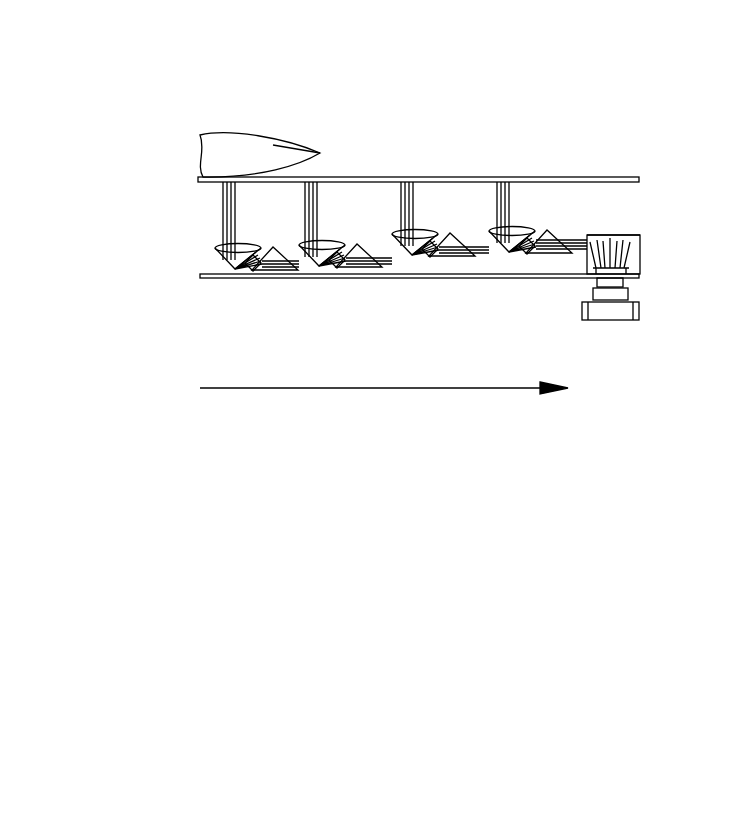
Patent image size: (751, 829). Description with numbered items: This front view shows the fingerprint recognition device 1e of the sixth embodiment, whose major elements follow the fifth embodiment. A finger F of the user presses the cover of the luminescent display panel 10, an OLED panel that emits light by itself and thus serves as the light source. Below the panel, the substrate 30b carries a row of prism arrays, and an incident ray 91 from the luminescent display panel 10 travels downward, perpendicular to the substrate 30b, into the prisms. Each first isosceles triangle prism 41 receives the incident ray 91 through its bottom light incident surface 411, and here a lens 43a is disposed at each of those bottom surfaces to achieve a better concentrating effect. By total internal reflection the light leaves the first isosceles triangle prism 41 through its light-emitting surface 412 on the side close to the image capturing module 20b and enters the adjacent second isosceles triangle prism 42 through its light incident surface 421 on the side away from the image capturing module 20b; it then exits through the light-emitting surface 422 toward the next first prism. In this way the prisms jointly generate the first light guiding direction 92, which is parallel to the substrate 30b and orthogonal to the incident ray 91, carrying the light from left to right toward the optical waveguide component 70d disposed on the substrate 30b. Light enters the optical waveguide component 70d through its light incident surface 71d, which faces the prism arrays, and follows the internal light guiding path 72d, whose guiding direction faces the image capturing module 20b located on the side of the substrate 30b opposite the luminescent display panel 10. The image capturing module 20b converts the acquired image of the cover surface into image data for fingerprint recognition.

The fingerprint recognition device 1e is at (203, 74).
The finger F is at (220, 145).
The luminescent display panel 10 is at (580, 177).
The substrate 30b is at (200, 277).
The incident ray 91 is at (223, 215).
The lenses 43a is at (230, 245).
The first isosceles triangle prism 41 is at (236, 268).
The light incident surface 411 is at (414, 258).
The light-emitting surface 412 is at (254, 266).
The second isosceles triangle prism 42 is at (285, 268).
The light incident surface 421 is at (272, 265).
The light-emitting surface 422 is at (303, 266).
The light incident surface 71d is at (583, 236).
The light guiding path 72d is at (641, 234).
The optical waveguide component 70d is at (632, 250).
The image capturing module 20b is at (600, 310).
The first light guiding direction 92 is at (470, 388).